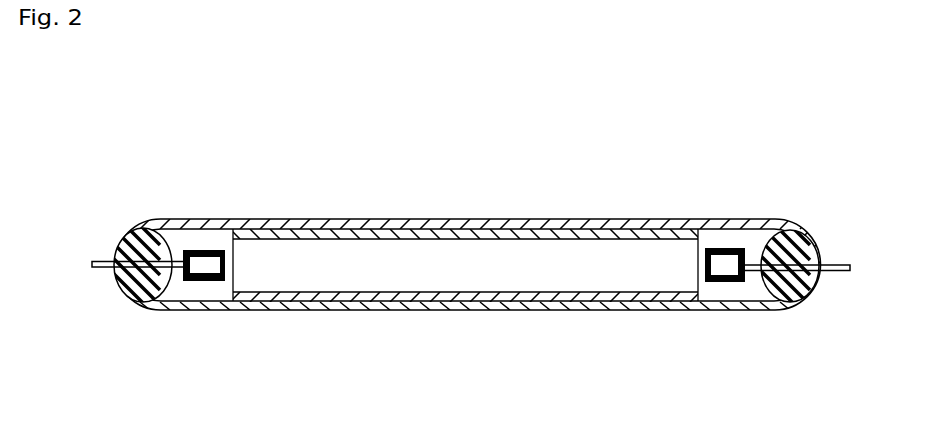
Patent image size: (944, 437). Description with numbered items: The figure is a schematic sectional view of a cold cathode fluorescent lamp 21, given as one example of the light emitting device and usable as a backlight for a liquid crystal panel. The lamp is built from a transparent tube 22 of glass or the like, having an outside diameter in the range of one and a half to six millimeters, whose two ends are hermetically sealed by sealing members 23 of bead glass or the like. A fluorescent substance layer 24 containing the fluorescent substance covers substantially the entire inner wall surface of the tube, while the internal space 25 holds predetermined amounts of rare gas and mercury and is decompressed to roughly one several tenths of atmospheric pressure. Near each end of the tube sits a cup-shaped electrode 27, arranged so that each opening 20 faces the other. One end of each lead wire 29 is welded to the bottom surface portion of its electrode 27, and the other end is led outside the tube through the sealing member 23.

The opening 20 is at (703, 274).
The cold cathode fluorescent lamp 21 is at (469, 179).
The transparent tube 22 is at (535, 311).
The sealing member 23 is at (133, 236).
The fluorescent substance layer 24 is at (587, 231).
The internal space 25 is at (313, 253).
The cup-shaped electrode 27 is at (196, 282).
The lead wire 29 is at (163, 270).